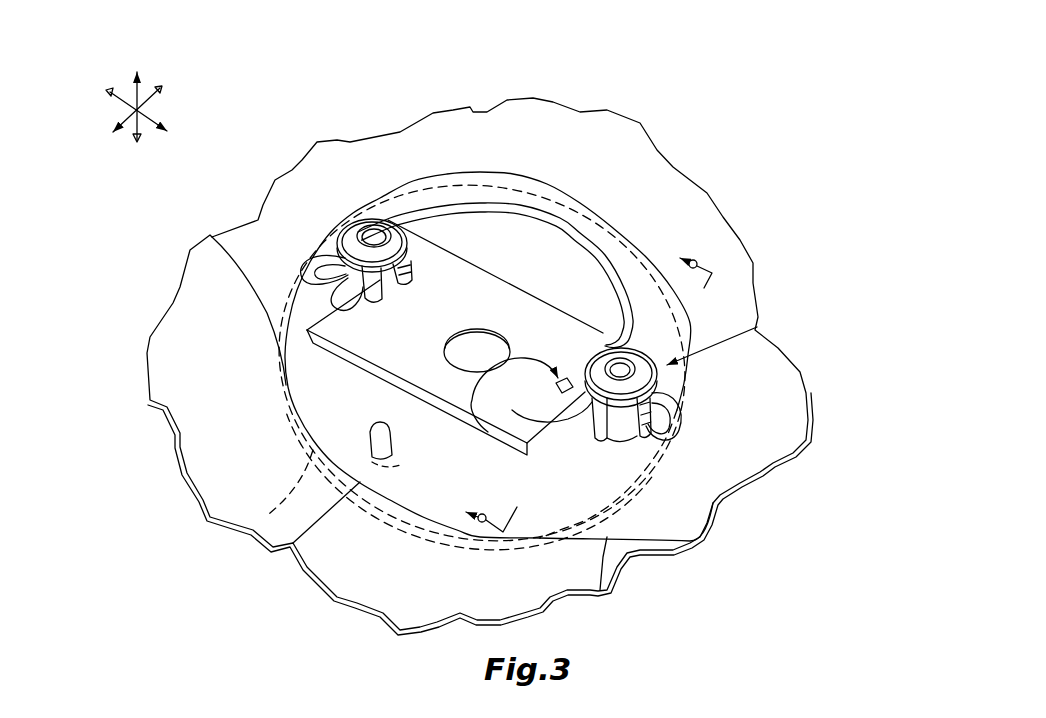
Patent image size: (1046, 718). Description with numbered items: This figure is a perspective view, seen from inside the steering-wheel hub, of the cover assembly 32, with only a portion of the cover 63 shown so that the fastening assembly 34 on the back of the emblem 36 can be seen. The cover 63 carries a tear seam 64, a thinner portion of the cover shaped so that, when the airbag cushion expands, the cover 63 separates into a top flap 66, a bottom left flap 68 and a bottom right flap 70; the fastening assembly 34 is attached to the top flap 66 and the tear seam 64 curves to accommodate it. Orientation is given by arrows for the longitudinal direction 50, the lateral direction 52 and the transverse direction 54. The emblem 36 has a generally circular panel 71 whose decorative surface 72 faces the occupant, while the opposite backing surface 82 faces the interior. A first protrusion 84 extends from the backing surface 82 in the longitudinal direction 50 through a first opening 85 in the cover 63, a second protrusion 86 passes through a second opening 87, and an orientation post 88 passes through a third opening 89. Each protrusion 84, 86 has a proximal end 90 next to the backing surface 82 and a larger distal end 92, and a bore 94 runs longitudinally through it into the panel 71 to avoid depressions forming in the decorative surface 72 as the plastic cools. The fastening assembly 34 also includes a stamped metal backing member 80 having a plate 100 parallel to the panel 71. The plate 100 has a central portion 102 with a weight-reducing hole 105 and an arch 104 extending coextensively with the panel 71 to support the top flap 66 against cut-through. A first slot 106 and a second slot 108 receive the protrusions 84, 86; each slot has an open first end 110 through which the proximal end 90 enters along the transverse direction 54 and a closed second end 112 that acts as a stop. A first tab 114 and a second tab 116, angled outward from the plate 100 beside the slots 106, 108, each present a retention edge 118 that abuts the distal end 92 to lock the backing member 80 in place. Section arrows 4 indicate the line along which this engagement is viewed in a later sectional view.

The cover assembly 32 is at (678, 83).
The fastening assembly 34 is at (503, 138).
The emblem 36 is at (440, 548).
The longitudinal direction 50 is at (140, 125).
The lateral direction 52 is at (153, 116).
The transverse direction 54 is at (150, 92).
The cover 63 is at (407, 107).
The tear seam 64 is at (600, 590).
The top flap 66 is at (753, 359).
The bottom left flap 68 is at (553, 562).
The bottom right flap 70 is at (253, 422).
The panel 71 is at (403, 527).
The decorative surface 72 is at (262, 525).
The backing member 80 is at (647, 223).
The backing surface 82 is at (347, 437).
The first protrusion 84 is at (363, 195).
The first opening 85 is at (310, 328).
The second protrusion 86 is at (757, 327).
The second opening 87 is at (597, 440).
The orientation post 88 is at (384, 423).
The third opening 89 is at (382, 463).
The proximal end 90 is at (340, 268).
The distal end 92 is at (300, 228).
The bore 94 is at (388, 233).
The plate 100 is at (533, 270).
The central portion 102 is at (480, 295).
The arch 104 is at (510, 193).
The hole 105 is at (488, 332).
The first slot 106 is at (320, 288).
The second slot 108 is at (620, 440).
The first end 110 is at (345, 293).
The second end 112 is at (400, 273).
The first tab 114 is at (387, 303).
The second tab 116 is at (455, 350).
The retention edge 118 is at (367, 240).
The section line 4 is at (593, 384).